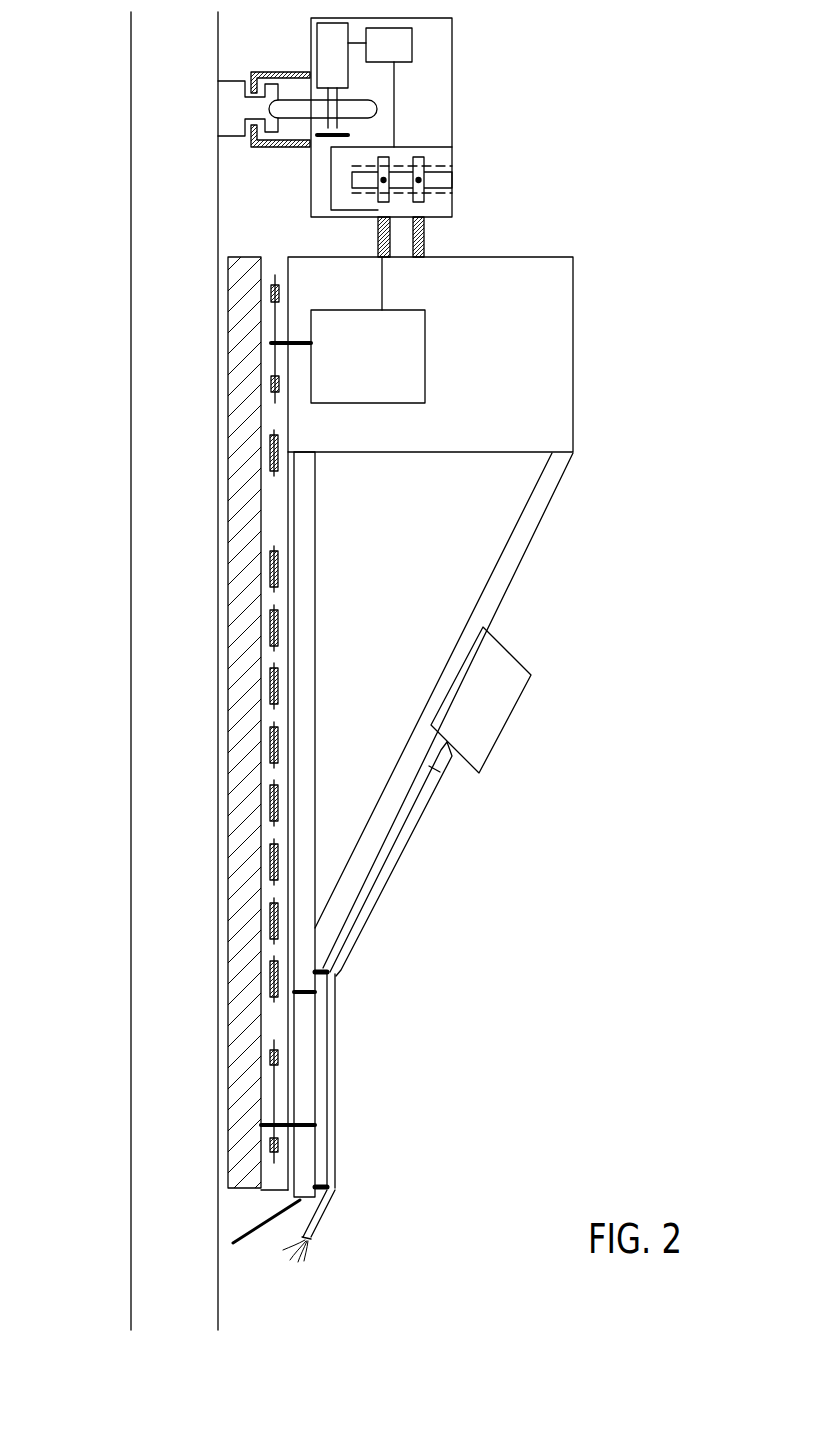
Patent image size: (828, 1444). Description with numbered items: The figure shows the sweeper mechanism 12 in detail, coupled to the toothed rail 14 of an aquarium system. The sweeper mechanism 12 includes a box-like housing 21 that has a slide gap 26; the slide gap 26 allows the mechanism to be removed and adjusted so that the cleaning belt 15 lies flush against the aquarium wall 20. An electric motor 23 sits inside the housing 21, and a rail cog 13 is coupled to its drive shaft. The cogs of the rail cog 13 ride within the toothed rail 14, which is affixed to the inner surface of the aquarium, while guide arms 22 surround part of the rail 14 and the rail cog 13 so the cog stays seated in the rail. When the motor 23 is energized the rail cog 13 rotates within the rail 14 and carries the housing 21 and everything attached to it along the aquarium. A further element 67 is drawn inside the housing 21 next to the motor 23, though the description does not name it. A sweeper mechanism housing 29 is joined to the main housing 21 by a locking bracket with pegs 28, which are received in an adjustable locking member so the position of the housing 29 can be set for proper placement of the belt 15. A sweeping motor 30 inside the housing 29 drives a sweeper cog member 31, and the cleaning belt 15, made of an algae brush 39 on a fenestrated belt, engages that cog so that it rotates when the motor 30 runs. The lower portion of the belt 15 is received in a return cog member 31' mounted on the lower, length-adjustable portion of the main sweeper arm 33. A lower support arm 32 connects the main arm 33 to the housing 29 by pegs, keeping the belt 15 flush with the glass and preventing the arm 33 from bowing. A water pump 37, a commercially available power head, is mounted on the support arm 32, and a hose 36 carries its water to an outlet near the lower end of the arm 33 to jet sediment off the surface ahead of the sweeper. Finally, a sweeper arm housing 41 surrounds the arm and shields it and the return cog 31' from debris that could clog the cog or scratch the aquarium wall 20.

The sweeper mechanism 12 is at (178, 41).
The toothed rail 14 is at (229, 89).
The guide arms 22 is at (290, 70).
The electric motor 23 is at (332, 50).
The control unit 67 is at (398, 46).
The housing 21 is at (418, 84).
The rail cog 13 is at (378, 115).
The slide gap 26 is at (350, 178).
The pegs 28 is at (445, 182).
The sweeper mechanism housing 29 is at (574, 332).
The sweeping motor 30 is at (381, 362).
The sweeper cog member 31 is at (203, 335).
The algae brush 39 is at (236, 440).
The aquarium wall 20 is at (182, 522).
The main sweeper arm 33 is at (289, 568).
The lower support arm 32 is at (516, 560).
The water pump 37 is at (508, 718).
The cleaning belt 15 is at (218, 780).
The hose 36 is at (367, 918).
The sweeper arm housing 41 is at (240, 1070).
The return cog member 31' is at (336, 1147).